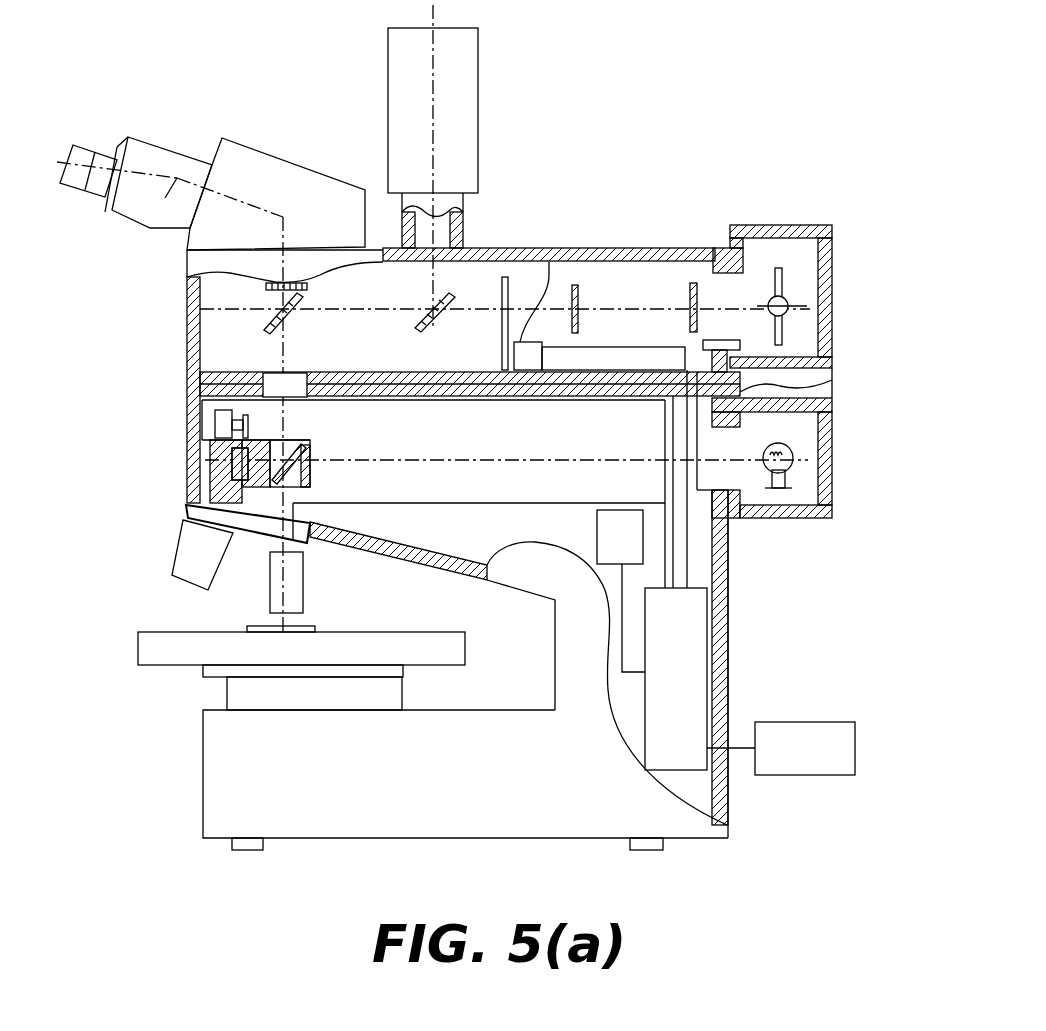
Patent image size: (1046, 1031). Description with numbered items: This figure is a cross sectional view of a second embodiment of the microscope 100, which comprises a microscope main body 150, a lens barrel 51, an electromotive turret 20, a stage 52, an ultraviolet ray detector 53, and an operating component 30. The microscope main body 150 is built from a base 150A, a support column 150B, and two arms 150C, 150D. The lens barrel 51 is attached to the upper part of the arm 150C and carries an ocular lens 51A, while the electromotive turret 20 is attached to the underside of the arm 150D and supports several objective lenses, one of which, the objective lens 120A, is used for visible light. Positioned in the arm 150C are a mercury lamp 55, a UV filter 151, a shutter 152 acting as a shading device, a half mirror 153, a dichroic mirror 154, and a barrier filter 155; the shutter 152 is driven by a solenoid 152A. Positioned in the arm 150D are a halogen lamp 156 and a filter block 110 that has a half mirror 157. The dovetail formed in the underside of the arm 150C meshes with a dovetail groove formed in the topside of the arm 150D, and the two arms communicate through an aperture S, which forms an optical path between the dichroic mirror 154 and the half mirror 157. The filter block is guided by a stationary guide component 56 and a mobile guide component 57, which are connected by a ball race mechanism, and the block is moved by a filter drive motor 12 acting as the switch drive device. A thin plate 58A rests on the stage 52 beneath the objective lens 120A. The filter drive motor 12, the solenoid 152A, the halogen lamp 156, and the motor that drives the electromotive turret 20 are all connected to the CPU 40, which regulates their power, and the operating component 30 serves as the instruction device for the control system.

The microscope 100 is at (736, 165).
The microscope main body 150 is at (655, 244).
The base 150A is at (203, 770).
The support column 150B is at (730, 565).
The arm 150C is at (728, 232).
The arm 150D is at (760, 392).
The ultraviolet ray detector 53 is at (481, 44).
The lens barrel 51 is at (297, 164).
The ocular lens 51A is at (94, 148).
The barrier filter 155 is at (308, 287).
The dichroic mirror 154 is at (264, 331).
The half mirror 153 is at (417, 330).
The shutter 152 is at (512, 272).
The solenoid 152A is at (549, 262).
The UV filter 151 is at (690, 290).
The mercury lamp 55 is at (788, 270).
The aperture S is at (303, 376).
The halogen lamp 156 is at (800, 445).
The filter drive motor 12 is at (212, 432).
The mobile guide component 57 is at (210, 455).
The stationary guide component 56 is at (208, 497).
The half mirror 157 is at (303, 447).
The filter block 110 is at (312, 478).
The electromotive turret 20 is at (183, 525).
The objective lens 120A is at (305, 590).
The sample plate 58A is at (247, 628).
The stage 52 is at (138, 648).
The CPU 40 is at (693, 700).
The operating component 30 is at (858, 742).